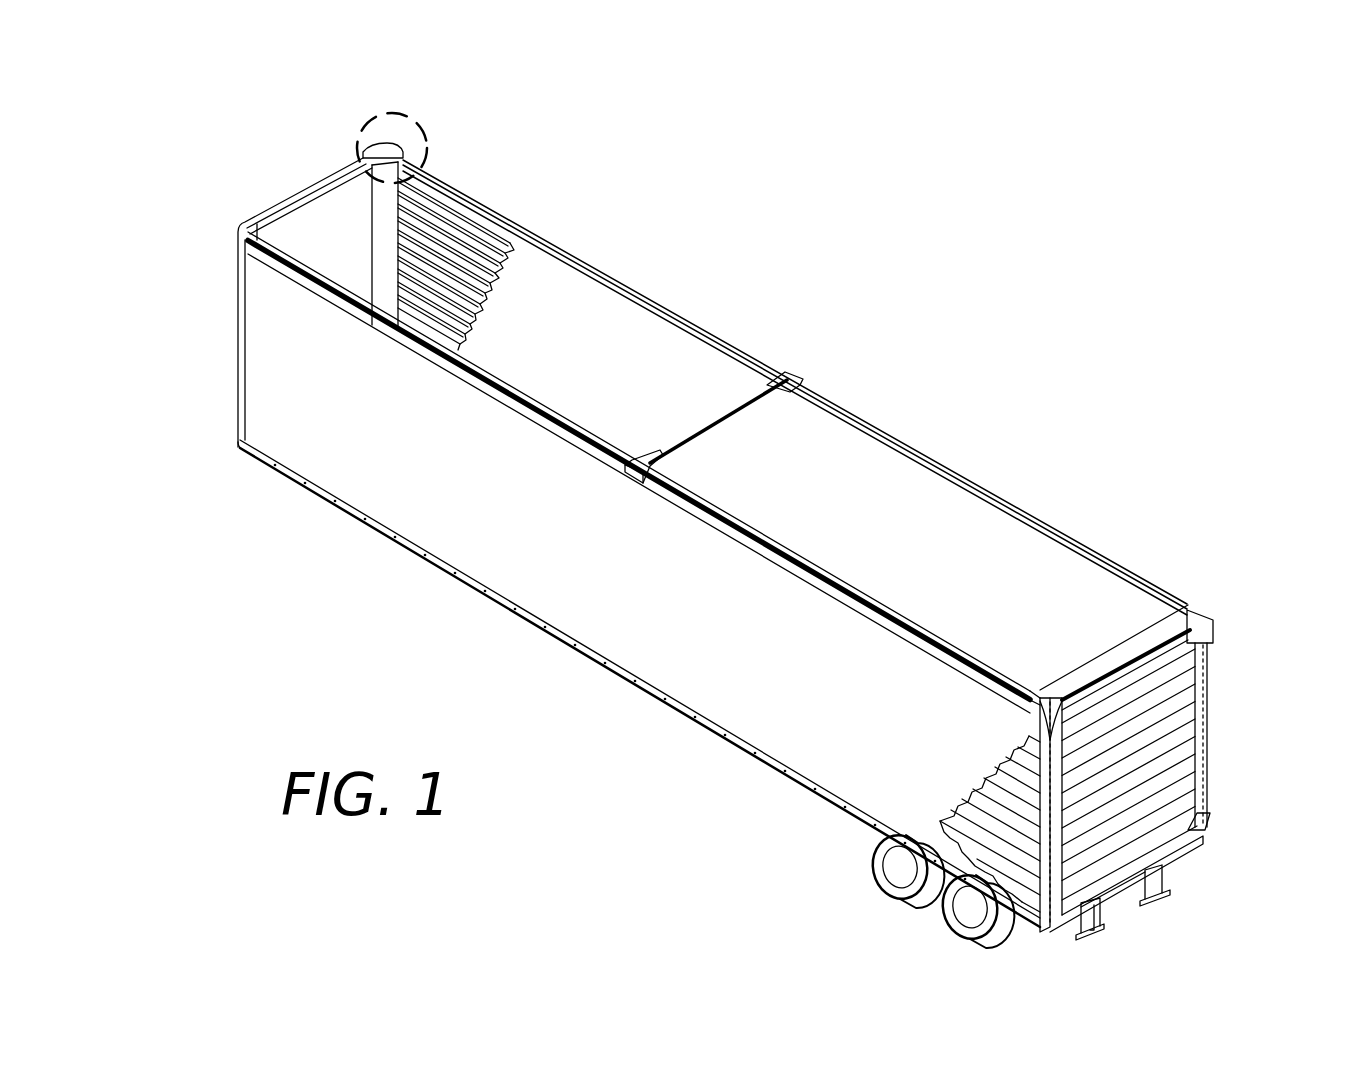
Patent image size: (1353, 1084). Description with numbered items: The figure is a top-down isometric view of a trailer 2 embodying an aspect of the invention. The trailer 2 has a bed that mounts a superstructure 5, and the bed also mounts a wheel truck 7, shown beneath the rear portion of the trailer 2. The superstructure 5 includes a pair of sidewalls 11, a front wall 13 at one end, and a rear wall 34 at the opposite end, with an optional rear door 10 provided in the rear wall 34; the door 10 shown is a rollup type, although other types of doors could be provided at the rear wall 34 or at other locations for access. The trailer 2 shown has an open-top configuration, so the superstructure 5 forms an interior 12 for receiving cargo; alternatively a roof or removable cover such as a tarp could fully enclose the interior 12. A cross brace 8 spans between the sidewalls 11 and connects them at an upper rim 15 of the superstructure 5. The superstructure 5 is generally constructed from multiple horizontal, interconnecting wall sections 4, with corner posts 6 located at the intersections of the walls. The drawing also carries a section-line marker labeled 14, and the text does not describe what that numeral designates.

The trailer 2 is at (213, 160).
The wall sections 4 is at (905, 612).
The superstructure 5 is at (1228, 616).
The corner posts 6 is at (412, 180).
The wheel truck 7 is at (855, 857).
The cross brace 8 is at (723, 410).
The rear door 10 is at (1163, 733).
The sidewalls 11 is at (832, 388).
The interior 12 is at (803, 469).
The front wall 13 is at (336, 233).
The top rail 14 is at (560, 415).
The upper rim 15 is at (648, 296).
The rear wall 34 is at (1208, 827).